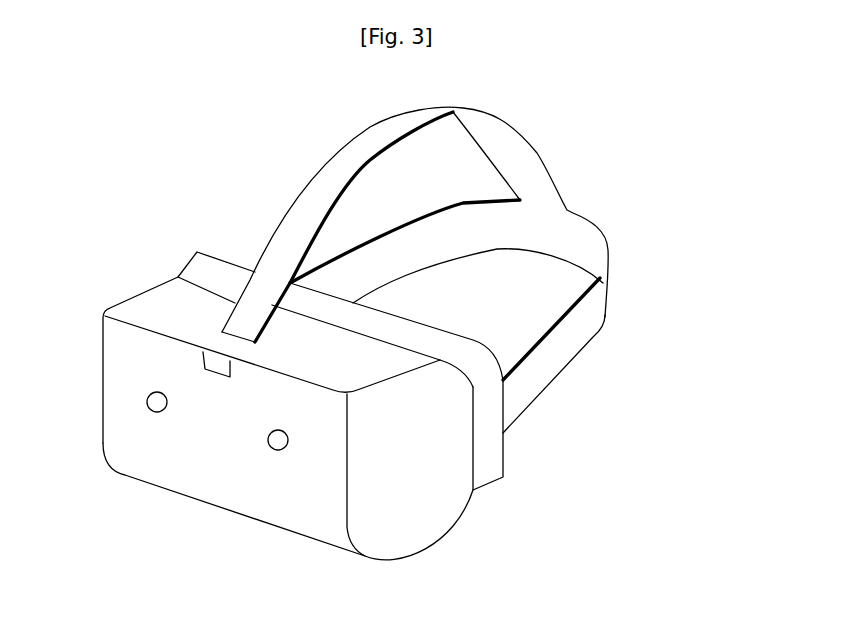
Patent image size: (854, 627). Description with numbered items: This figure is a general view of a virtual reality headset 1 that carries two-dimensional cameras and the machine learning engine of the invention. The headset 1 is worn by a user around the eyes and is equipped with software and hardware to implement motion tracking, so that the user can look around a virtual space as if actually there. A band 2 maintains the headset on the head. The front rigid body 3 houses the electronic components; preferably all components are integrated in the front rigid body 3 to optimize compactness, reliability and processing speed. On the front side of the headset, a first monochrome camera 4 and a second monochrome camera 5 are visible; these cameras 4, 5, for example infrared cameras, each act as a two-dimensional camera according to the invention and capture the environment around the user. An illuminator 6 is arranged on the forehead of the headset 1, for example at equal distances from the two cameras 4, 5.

The virtual reality headset 1 is at (654, 157).
The band 2 is at (314, 149).
The front rigid body 3 is at (477, 537).
The first monochrome camera 4 is at (272, 450).
The second monochrome camera 5 is at (153, 402).
The illuminator 6 is at (217, 365).